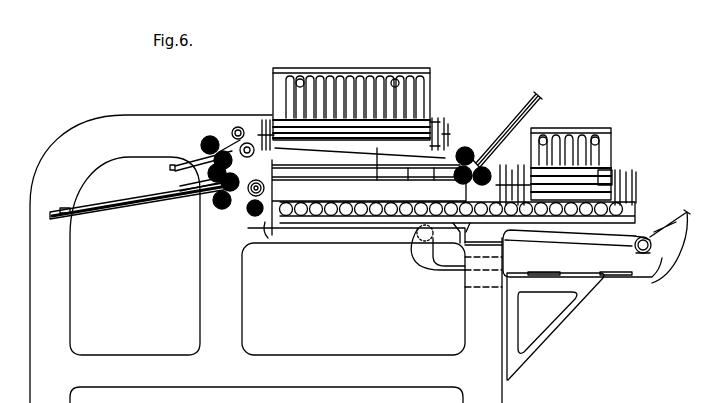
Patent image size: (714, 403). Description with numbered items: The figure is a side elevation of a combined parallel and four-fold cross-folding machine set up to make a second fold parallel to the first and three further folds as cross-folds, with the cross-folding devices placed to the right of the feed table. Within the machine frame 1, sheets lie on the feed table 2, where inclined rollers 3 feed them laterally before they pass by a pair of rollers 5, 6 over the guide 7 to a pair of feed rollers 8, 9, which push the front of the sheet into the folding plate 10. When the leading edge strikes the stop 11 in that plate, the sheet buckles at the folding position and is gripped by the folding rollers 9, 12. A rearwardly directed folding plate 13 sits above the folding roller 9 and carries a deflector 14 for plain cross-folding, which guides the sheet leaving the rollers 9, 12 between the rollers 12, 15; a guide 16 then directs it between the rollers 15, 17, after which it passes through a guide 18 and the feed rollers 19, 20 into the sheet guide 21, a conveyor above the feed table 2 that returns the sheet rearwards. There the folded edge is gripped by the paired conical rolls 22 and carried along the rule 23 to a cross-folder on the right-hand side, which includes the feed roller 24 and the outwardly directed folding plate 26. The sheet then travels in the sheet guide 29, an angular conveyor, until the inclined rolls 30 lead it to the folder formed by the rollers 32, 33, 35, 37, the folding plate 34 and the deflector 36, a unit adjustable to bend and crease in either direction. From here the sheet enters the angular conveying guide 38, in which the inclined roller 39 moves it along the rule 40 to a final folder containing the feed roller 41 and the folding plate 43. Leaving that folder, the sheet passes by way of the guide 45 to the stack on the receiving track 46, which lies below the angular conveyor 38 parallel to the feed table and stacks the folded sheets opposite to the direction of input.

The machine frame 1 is at (186, 368).
The feed table 2 is at (318, 215).
The inclined rollers 3 is at (368, 214).
The roller 5 is at (264, 189).
The roller 6 is at (257, 216).
The guide 7 is at (238, 208).
The feed roller 8 is at (212, 182).
The feed roller 9 is at (230, 192).
The folding plate 10 is at (126, 209).
The stop 11 is at (70, 216).
The folding roller 12 is at (196, 188).
The folding plate 13 is at (322, 170).
The deflector 14 is at (257, 241).
The roller 15 is at (218, 150).
The guide 16 is at (172, 166).
The roller 17 is at (205, 138).
The guide 18 is at (223, 150).
The feed roller 19 is at (239, 127).
The feed roller 20 is at (250, 143).
The sheet guide 21 is at (377, 174).
The conical rolls 22 is at (433, 120).
The rule 23 is at (445, 130).
The feed roller 24 is at (284, 118).
The folding plate 26 is at (347, 76).
The sheet guide 29 is at (408, 184).
The inclined rolls 30 is at (434, 184).
The roller 32 is at (468, 165).
The roller 33 is at (463, 147).
The folding plate 34 is at (548, 100).
The roller 35 is at (490, 172).
The deflector 36 is at (430, 238).
The roller 37 is at (472, 205).
The angular conveying guide 38 is at (620, 198).
The inclined roller 39 is at (622, 182).
The rule 40 is at (627, 190).
The feed roller 41 is at (604, 170).
The folding plate 43 is at (594, 132).
The guide 45 is at (658, 236).
The receiving track 46 is at (622, 258).